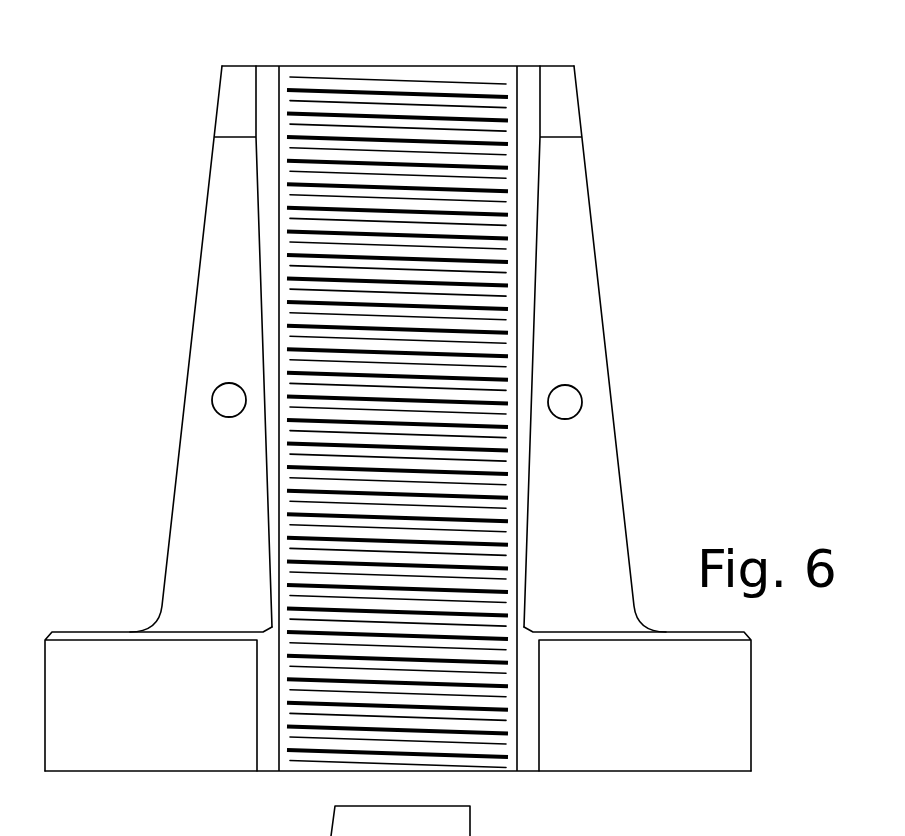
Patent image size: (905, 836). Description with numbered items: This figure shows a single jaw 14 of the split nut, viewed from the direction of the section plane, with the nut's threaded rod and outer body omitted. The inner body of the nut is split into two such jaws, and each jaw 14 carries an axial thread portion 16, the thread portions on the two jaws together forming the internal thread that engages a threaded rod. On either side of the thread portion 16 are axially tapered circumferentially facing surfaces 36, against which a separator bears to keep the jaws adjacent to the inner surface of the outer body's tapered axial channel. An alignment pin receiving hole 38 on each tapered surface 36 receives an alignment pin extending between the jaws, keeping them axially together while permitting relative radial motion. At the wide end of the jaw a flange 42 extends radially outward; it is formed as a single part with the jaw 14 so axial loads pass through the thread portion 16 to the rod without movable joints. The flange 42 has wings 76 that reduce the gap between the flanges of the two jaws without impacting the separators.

The jaw 14 is at (628, 96).
The axial thread portion 16 is at (373, 93).
The axially tapered circumferentially facing surface 36 is at (231, 600).
The alignment pin receiving hole 38 is at (212, 390).
The flange 42 is at (113, 632).
The wing 76 is at (594, 730).